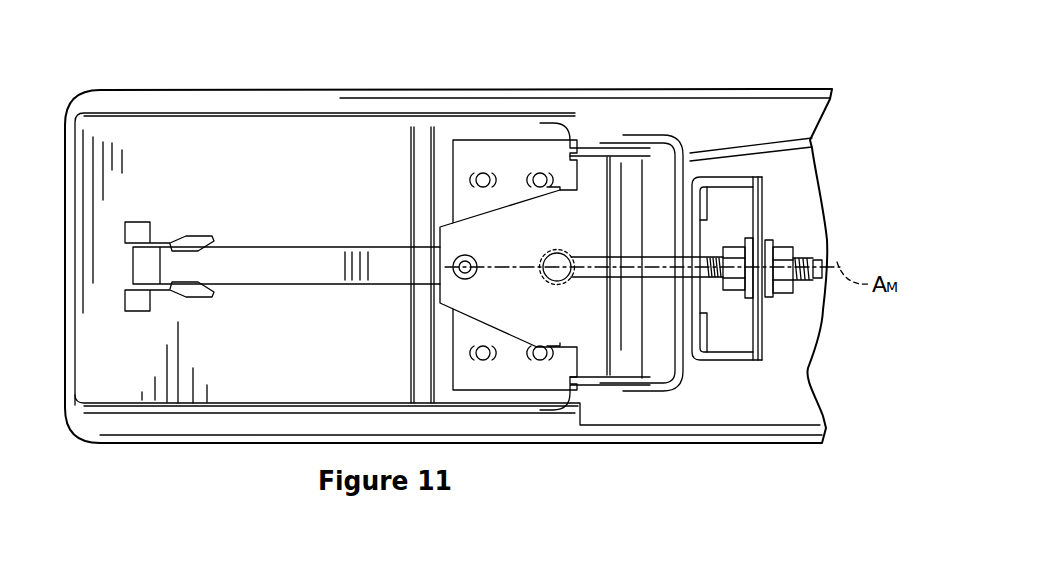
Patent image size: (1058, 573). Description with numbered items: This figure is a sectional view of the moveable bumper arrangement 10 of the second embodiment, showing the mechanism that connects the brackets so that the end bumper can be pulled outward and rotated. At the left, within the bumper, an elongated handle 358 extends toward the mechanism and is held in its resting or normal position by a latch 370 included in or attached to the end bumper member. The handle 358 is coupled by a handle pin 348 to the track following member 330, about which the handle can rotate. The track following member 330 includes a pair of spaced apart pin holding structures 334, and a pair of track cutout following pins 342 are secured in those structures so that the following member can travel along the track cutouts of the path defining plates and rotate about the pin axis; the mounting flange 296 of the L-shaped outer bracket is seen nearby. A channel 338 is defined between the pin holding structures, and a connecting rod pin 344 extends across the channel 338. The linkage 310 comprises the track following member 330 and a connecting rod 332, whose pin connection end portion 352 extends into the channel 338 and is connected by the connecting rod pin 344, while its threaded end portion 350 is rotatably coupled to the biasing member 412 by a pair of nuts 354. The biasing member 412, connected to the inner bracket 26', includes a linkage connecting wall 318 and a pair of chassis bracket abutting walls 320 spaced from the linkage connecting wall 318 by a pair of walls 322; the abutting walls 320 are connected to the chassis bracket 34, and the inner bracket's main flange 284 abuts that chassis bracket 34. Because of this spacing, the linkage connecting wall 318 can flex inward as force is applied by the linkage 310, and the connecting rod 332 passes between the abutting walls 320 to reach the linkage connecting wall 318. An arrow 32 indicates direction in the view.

The moveable bumper arrangement 10 is at (512, 41).
The inner bracket 26' is at (452, 238).
The direction of movement 32 is at (573, 79).
The chassis bracket 34 is at (777, 140).
The main flange 284 is at (653, 376).
The mounting flange 296 is at (470, 153).
The linkage 310 is at (640, 328).
The linkage connecting wall 318 is at (762, 315).
The chassis bracket abutting walls 320 is at (702, 212).
The walls 322 is at (728, 176).
The track following member 330 is at (567, 352).
The connecting rod 332 is at (642, 160).
The pin holding structures 334 is at (607, 157).
The channel 338 is at (575, 282).
The track cutout following pins 342 is at (585, 150).
The connecting rod pin 344 is at (520, 152).
The handle pin 348 is at (460, 280).
The threaded end portion 350 is at (805, 262).
The pin connection end portion 352 is at (556, 258).
The nuts 354 is at (785, 250).
The handle 358 is at (250, 272).
The latch 370 is at (200, 294).
The biasing member 412 is at (757, 238).